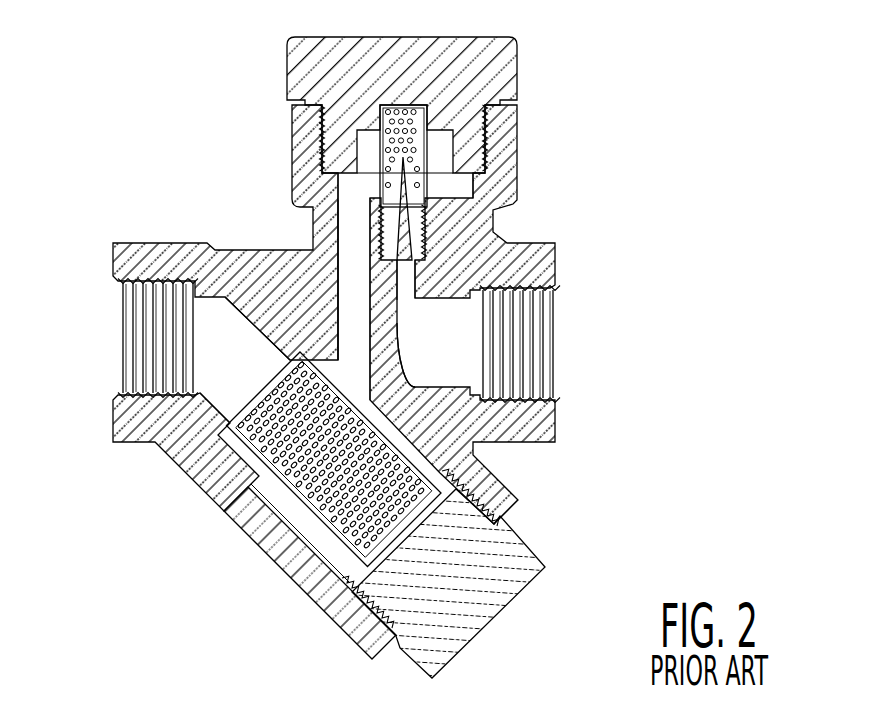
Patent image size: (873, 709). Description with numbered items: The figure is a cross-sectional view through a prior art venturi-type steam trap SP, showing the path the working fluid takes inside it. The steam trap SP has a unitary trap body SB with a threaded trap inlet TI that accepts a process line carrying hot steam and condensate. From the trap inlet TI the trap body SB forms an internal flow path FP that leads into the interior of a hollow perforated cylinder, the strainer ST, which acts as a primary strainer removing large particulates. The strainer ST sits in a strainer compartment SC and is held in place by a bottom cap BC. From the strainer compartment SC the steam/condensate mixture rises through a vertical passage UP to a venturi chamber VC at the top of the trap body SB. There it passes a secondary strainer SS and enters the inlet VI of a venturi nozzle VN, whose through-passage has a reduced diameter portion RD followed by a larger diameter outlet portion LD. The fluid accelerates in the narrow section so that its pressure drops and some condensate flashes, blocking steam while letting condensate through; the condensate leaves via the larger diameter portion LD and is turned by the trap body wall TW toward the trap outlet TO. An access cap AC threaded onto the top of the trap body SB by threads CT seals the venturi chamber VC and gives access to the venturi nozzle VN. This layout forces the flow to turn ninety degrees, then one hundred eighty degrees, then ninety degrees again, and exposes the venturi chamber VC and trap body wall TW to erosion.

The steam trap SP is at (128, 130).
The trap body SB is at (138, 243).
The access cap AC is at (515, 68).
The inlet of the venturi nozzle VI is at (320, 127).
The threads CT is at (490, 118).
The secondary strainer SS is at (382, 128).
The reduced diameter portion RD is at (430, 180).
The venturi chamber VC is at (345, 183).
The venturi nozzle VN is at (426, 206).
The larger diameter outlet portion LD is at (410, 236).
The vertical passage UP is at (352, 278).
The trap body wall TW is at (405, 366).
The trap inlet TI is at (112, 333).
The trap outlet TO is at (540, 329).
The flow path FP is at (222, 383).
The strainer ST is at (243, 455).
The strainer compartment SC is at (285, 522).
The bottom cap BC is at (533, 548).